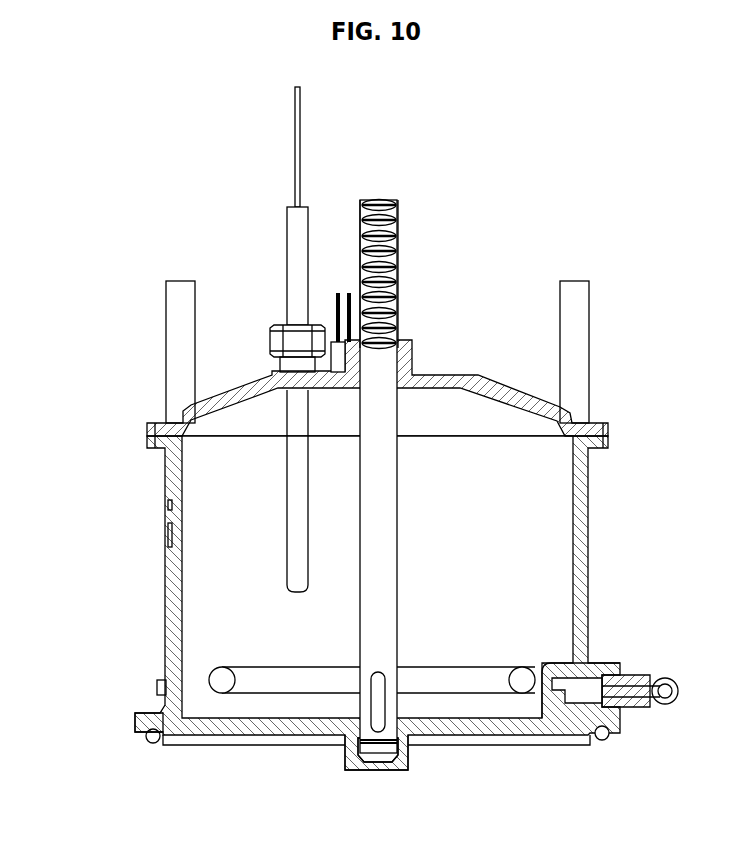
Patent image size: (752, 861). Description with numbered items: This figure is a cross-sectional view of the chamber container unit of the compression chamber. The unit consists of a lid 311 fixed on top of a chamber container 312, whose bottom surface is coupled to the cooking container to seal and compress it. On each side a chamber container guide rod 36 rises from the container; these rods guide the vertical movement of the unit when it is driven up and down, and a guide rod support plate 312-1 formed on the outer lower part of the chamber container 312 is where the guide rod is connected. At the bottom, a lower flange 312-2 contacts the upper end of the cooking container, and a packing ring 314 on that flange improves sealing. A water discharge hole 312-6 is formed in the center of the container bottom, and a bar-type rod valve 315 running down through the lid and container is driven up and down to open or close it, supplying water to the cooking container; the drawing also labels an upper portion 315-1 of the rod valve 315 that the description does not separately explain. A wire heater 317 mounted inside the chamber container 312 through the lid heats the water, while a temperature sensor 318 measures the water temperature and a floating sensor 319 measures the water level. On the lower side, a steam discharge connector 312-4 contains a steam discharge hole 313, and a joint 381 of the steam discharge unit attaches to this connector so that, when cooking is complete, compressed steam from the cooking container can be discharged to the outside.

The chamber container guide rod 36 is at (587, 342).
The lid 311 is at (513, 385).
The chamber container 312 is at (590, 508).
The guide rod support plate 312-1 is at (158, 687).
The lower flange 312-2 is at (143, 722).
The steam discharge connector 312-4 is at (605, 665).
The water discharge hole 312-6 is at (375, 757).
The steam discharge hole 313 is at (557, 722).
The packing ring 314 is at (605, 740).
The rod valve 315 is at (396, 232).
The spring upper end 315-1 is at (390, 207).
The wire heater 317 is at (497, 663).
The temperature sensor 318 is at (289, 295).
The floating sensor 319 is at (335, 295).
The joint 381 is at (640, 672).